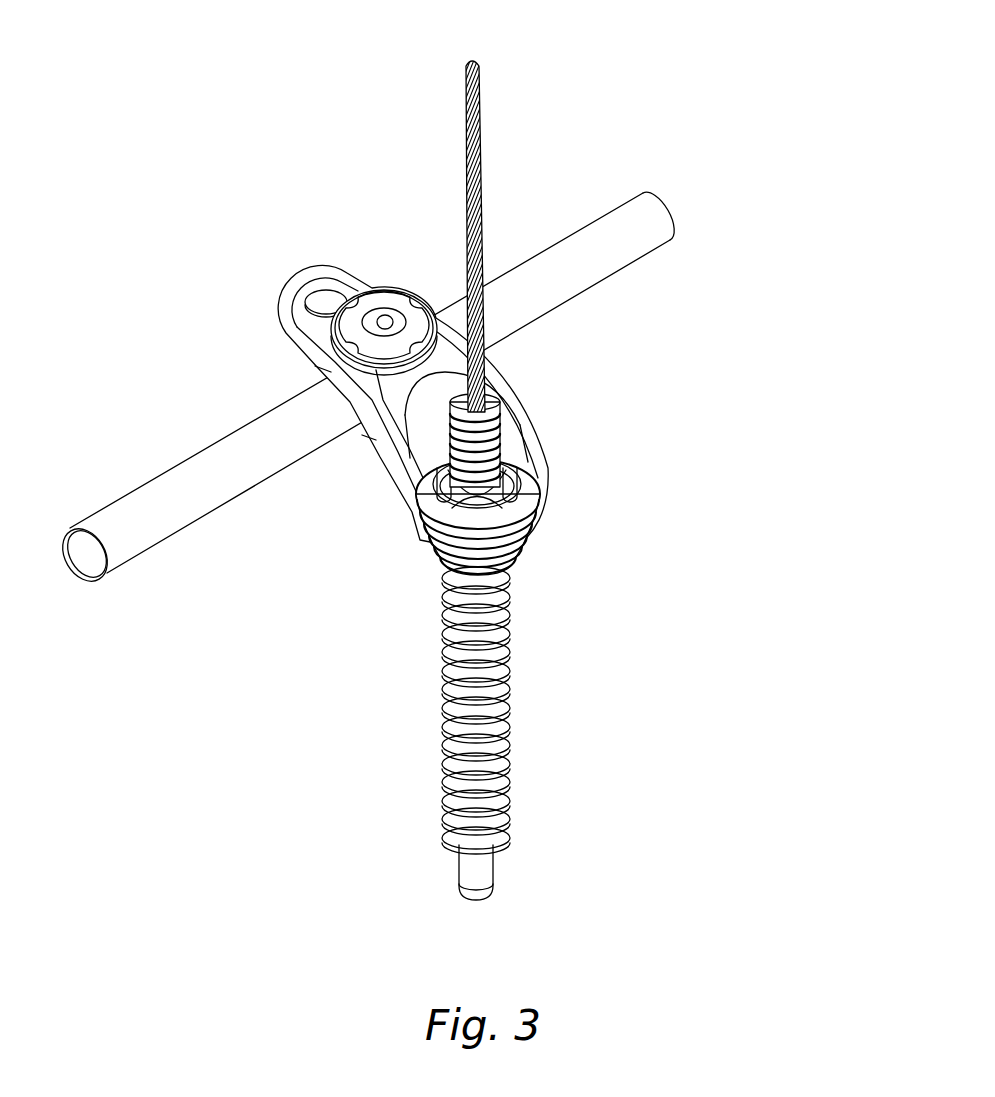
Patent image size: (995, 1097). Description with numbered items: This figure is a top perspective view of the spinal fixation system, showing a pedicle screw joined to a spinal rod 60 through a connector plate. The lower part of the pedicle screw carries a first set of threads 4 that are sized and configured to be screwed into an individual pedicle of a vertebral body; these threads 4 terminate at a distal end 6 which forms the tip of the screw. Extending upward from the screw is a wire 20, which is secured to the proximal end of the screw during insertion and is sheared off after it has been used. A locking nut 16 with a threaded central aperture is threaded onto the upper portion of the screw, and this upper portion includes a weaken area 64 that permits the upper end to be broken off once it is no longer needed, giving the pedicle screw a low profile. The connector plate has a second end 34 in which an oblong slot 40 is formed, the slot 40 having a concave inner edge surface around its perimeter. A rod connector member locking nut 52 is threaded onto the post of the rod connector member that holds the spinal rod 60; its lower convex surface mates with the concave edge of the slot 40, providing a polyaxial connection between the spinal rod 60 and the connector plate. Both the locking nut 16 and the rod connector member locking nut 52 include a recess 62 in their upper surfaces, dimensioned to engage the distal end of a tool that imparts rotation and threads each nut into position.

The first set of threads 4 is at (513, 687).
The distal end 6 is at (497, 863).
The locking nut 16 is at (477, 505).
The wire 20 is at (478, 148).
The second end 34 is at (277, 325).
The slot 40 is at (318, 312).
The rod connector member locking nut 52 is at (378, 352).
The spinal rod 60 is at (657, 220).
The recess 62 is at (372, 290).
The weaken area 64 is at (500, 463).